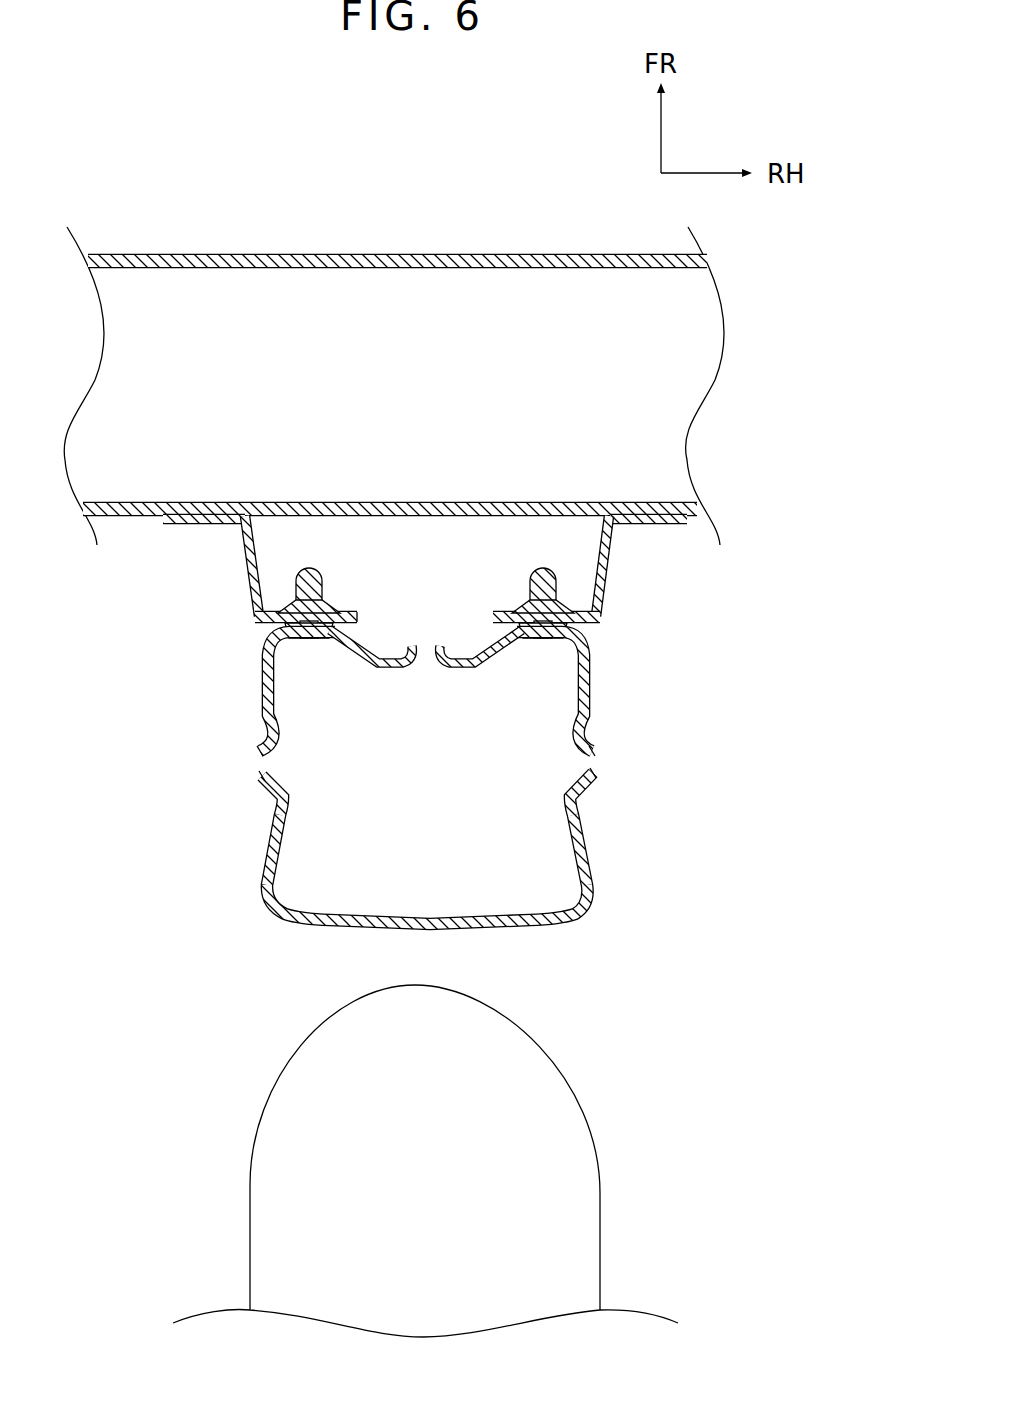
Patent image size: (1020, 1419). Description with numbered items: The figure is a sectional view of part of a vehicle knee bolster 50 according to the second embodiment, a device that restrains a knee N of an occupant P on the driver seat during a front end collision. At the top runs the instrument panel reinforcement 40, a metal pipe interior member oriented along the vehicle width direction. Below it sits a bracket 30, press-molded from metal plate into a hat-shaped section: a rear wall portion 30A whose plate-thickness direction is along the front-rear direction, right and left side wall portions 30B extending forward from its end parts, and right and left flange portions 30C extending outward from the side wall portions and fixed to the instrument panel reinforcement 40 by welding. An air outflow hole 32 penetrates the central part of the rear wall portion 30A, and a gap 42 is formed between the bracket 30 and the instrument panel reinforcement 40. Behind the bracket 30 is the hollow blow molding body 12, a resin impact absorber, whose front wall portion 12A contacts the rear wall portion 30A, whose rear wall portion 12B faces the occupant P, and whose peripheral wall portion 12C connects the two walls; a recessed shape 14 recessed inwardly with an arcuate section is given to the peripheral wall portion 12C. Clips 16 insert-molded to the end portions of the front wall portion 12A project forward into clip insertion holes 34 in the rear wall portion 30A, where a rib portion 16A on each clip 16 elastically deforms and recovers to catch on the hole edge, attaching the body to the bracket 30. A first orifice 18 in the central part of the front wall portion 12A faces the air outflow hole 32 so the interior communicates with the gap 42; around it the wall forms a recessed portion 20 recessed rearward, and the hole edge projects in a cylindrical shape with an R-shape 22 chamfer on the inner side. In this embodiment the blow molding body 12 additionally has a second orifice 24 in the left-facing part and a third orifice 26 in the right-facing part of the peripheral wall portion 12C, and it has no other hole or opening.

The instrument panel reinforcement 40 is at (420, 253).
The gap 42 is at (425, 545).
The bracket 30 is at (427, 557).
The rear wall portion 30A is at (277, 622).
The side wall portion 30B is at (250, 585).
The flange portion 30C is at (200, 525).
The air outflow hole 32 is at (358, 616).
The clip 16 is at (427, 588).
The rib portion 16A is at (280, 590).
The clip insertion hole 34 is at (302, 637).
The recessed shape 14 is at (474, 660).
The front wall portion 12A is at (421, 649).
The first orifice 18 is at (422, 655).
The recessed portion 20 is at (480, 657).
The blow molding body 12 is at (409, 835).
The rear wall portion 12B is at (523, 928).
The peripheral wall portion 12C is at (266, 858).
The R-shape 22 is at (445, 660).
The second orifice 24 is at (260, 772).
The third orifice 26 is at (594, 770).
The vehicle knee bolster 50 is at (445, 726).
The knee N is at (570, 1085).
The occupant P is at (603, 1222).